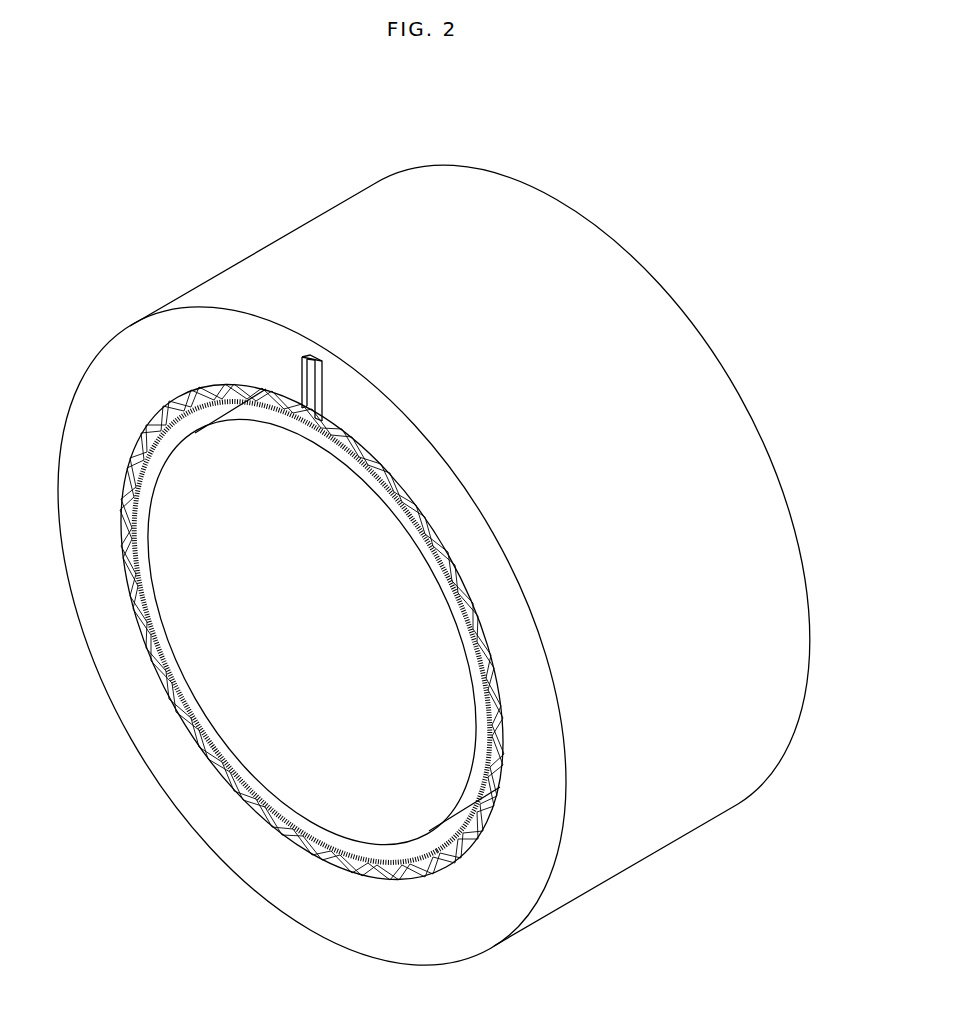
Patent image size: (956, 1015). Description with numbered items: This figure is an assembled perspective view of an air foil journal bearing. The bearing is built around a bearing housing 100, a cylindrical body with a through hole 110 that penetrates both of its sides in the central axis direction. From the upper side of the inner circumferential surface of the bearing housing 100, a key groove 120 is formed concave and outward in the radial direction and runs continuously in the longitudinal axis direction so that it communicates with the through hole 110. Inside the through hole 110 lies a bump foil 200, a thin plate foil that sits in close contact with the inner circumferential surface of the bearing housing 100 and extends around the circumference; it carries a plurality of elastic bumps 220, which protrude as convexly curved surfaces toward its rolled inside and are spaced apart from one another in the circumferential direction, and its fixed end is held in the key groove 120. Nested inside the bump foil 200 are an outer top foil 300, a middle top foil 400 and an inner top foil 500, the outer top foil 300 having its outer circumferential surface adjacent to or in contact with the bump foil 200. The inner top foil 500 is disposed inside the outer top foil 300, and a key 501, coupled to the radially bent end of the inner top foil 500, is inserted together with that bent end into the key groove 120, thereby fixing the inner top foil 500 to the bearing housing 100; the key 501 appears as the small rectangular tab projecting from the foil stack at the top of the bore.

The bearing housing 100 is at (101, 365).
The through hole 110 is at (197, 743).
The key groove 120 is at (305, 358).
The bump foil 200 is at (187, 390).
The elastic bumps 220 is at (217, 390).
The outer top foil 300 is at (322, 356).
The middle top foil 400 is at (318, 360).
The inner top foil 500 is at (320, 777).
The key 501 is at (300, 362).